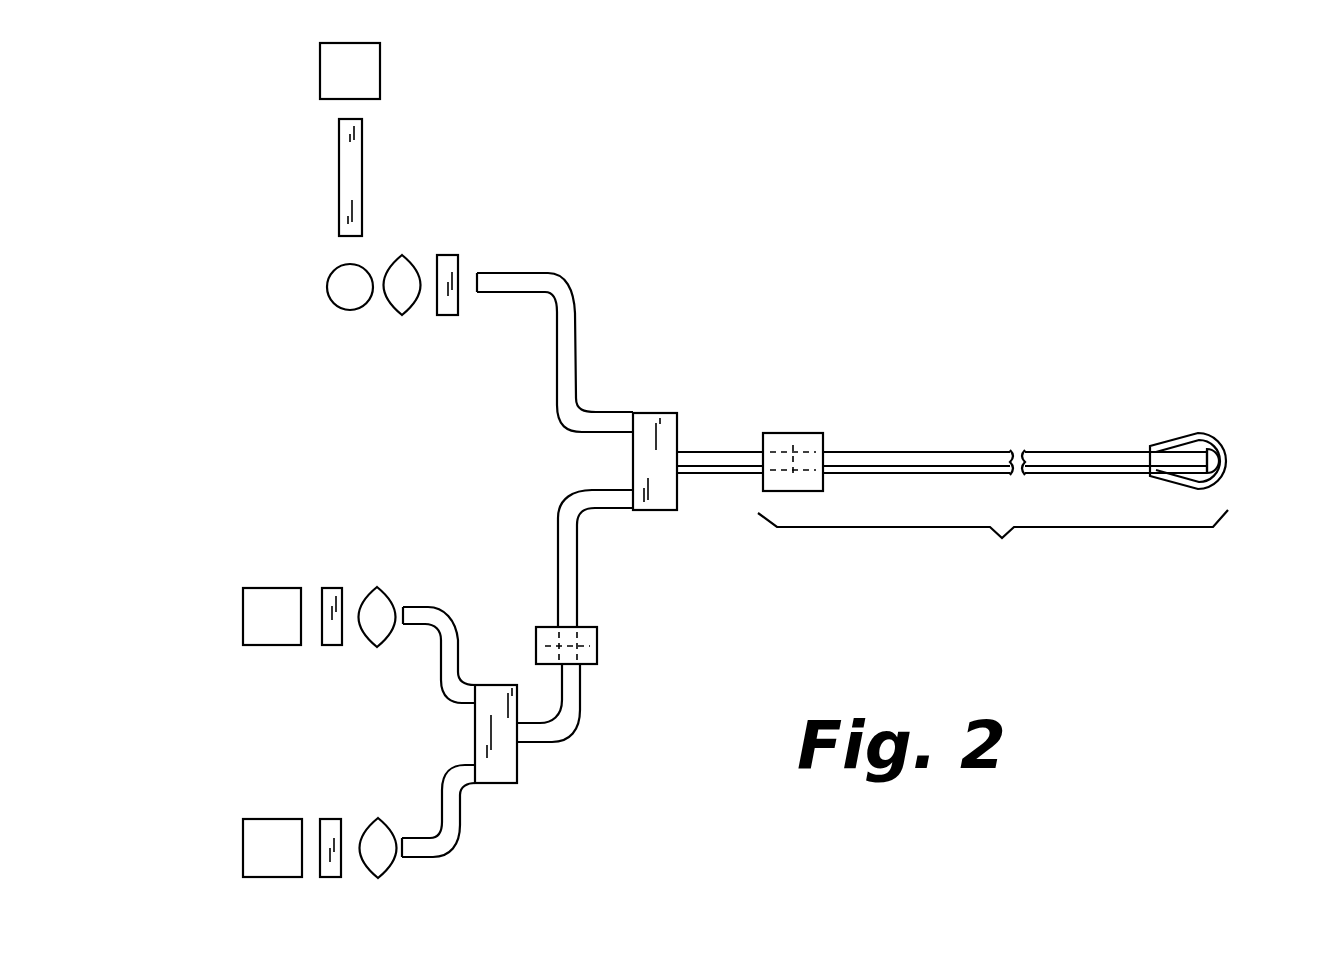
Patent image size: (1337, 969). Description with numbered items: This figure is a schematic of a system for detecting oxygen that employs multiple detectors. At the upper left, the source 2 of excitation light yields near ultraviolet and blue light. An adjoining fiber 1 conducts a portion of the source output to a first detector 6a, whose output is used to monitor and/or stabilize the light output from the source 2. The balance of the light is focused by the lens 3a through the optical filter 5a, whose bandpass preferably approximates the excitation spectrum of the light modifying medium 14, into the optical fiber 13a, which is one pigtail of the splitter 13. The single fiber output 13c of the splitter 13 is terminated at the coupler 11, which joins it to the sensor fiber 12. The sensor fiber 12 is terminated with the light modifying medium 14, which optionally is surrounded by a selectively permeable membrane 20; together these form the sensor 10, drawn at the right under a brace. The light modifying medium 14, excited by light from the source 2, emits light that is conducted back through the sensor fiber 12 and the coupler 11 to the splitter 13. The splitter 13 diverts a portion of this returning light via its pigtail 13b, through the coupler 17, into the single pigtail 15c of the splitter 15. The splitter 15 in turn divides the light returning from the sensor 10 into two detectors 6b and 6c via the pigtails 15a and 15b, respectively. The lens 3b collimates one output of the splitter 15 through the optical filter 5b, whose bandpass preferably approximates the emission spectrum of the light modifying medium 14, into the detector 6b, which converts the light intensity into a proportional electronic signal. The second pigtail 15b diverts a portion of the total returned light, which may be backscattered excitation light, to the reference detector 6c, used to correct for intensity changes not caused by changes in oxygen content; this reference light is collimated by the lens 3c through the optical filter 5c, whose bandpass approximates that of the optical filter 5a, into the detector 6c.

The adjoining fiber 1 is at (352, 158).
The source of excitation light 2 is at (337, 297).
The lens 3a is at (400, 297).
The lens 3b is at (380, 598).
The lens 3c is at (378, 845).
The optical filter 5a is at (450, 262).
The optical filter 5b is at (332, 590).
The optical filter 5c is at (330, 830).
The first detector 6a is at (338, 53).
The detector 6b is at (250, 612).
The reference detector 6c is at (252, 842).
The sensor 10 is at (993, 549).
The coupler 11 is at (803, 430).
The sensor fiber 12 is at (935, 450).
The splitter 13 is at (593, 462).
The optical fiber 13a is at (568, 300).
The pigtail 13b is at (585, 548).
The single fiber output 13c is at (725, 450).
The light modifying medium 14 is at (1228, 448).
The splitter 15 is at (456, 741).
The pigtail 15a is at (455, 625).
The second pigtail 15b is at (463, 810).
The single pigtail 15c is at (572, 733).
The coupler 17 is at (597, 645).
The selectively permeable membrane 20 is at (1185, 433).